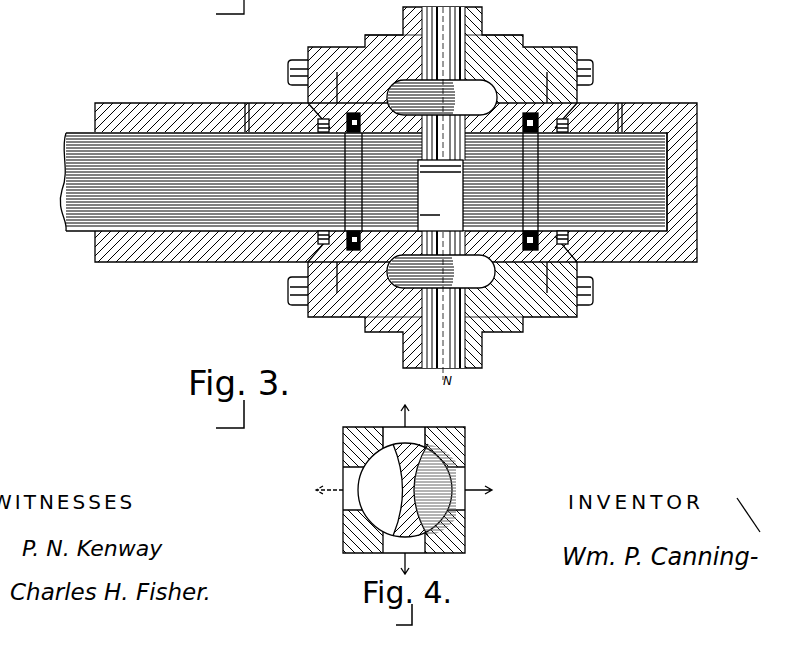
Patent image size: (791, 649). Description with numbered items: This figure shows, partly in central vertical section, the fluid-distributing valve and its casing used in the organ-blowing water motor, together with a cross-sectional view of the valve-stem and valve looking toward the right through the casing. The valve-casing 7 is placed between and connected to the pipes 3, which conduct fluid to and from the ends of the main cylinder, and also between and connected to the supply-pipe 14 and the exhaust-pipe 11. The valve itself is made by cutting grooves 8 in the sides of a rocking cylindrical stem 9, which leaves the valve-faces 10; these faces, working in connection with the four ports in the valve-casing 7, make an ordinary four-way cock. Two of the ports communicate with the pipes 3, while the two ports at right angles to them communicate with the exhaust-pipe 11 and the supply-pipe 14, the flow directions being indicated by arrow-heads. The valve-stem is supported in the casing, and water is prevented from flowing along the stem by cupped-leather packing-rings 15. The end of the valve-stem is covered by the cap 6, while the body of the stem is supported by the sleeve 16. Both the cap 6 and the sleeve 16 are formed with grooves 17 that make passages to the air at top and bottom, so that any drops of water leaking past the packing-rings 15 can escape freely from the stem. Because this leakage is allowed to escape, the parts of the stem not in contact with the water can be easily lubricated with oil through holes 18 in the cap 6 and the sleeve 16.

In FIG. 3, the pipes 3 is at (491, 346).
In FIG. 4, the pipes 3 is at (408, 488).
In FIG. 3, the cap 6 is at (697, 232).
In FIG. 3, the valve-casing 7 is at (523, 39).
In FIG. 3, the grooves 8 is at (440, 195).
In FIG. 4, the grooves 8 is at (414, 490).
In FIG. 3, the rocking cylindrical stem 9 is at (62, 214).
In FIG. 4, the rocking cylindrical stem 9 is at (455, 501).
In FIG. 3, the valve-faces 10 is at (442, 193).
In FIG. 4, the valve-faces 10 is at (397, 537).
In FIG. 4, the exhaust-pipe 11 is at (490, 489).
In FIG. 4, the supply-pipe 14 is at (319, 490).
In FIG. 3, the packing-rings 15 is at (515, 121).
In FIG. 3, the sleeve 16 is at (198, 264).
In FIG. 3, the grooves 17 is at (568, 239).
In FIG. 4, the grooves 17 is at (465, 441).
In FIG. 3, the holes 18 is at (622, 102).